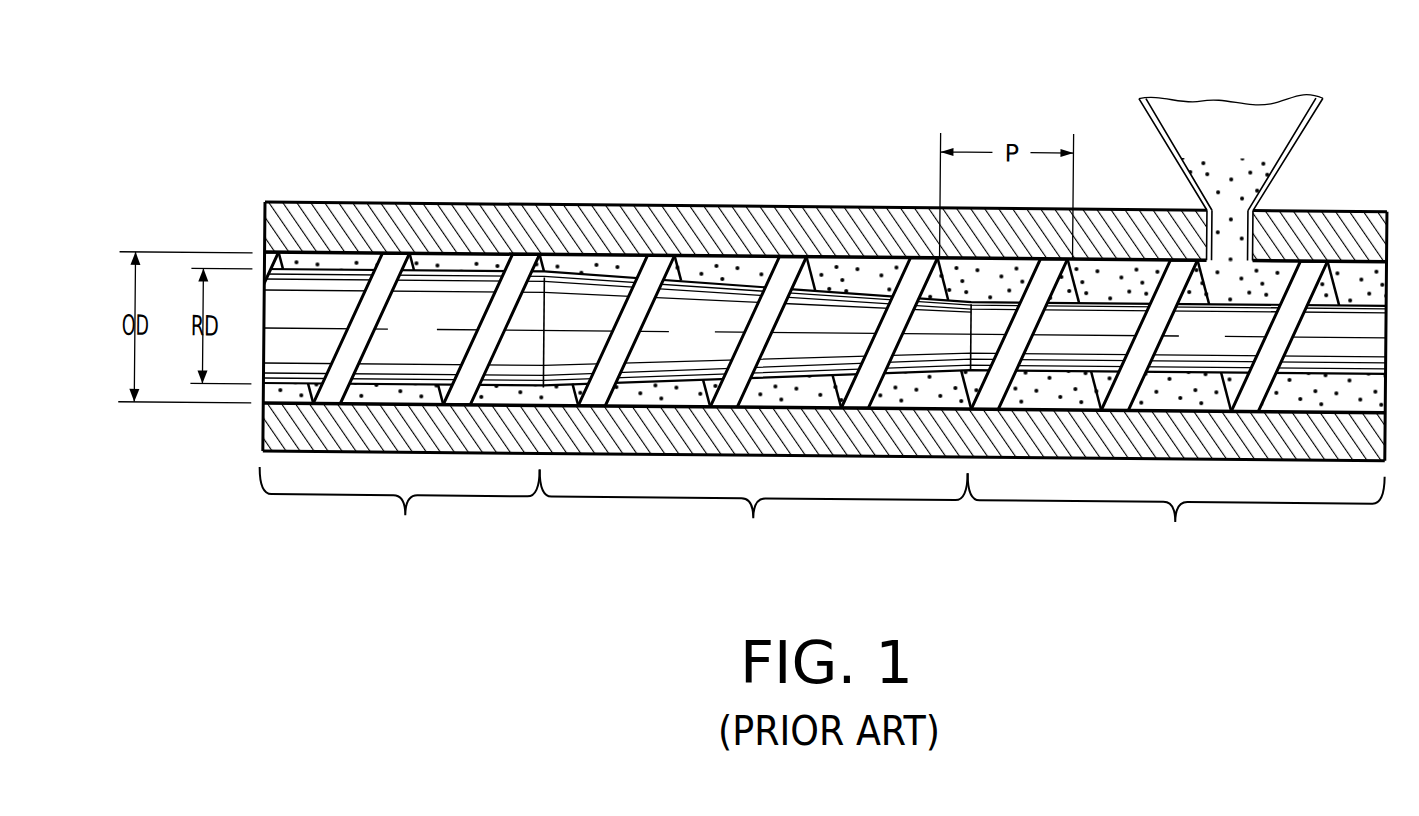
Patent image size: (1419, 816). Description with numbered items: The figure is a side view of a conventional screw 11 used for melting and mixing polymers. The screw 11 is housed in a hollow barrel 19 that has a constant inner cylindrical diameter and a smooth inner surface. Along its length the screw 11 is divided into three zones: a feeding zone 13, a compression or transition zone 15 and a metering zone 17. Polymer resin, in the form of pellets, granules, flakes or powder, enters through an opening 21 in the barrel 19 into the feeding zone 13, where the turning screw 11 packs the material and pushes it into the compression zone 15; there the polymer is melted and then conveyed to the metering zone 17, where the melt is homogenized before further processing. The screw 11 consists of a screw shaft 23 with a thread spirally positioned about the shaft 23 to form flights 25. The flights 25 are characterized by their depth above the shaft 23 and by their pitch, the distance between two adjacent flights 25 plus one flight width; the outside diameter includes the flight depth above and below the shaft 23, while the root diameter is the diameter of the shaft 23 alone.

The screw 11 is at (784, 273).
The feeding zone 13 is at (1176, 518).
The compression or transition zone 15 is at (753, 515).
The metering zone 17 is at (399, 511).
The hollow barrel 19 is at (630, 202).
The opening 21 is at (1230, 138).
The screw shaft 23 is at (824, 332).
The flights 25 is at (490, 331).